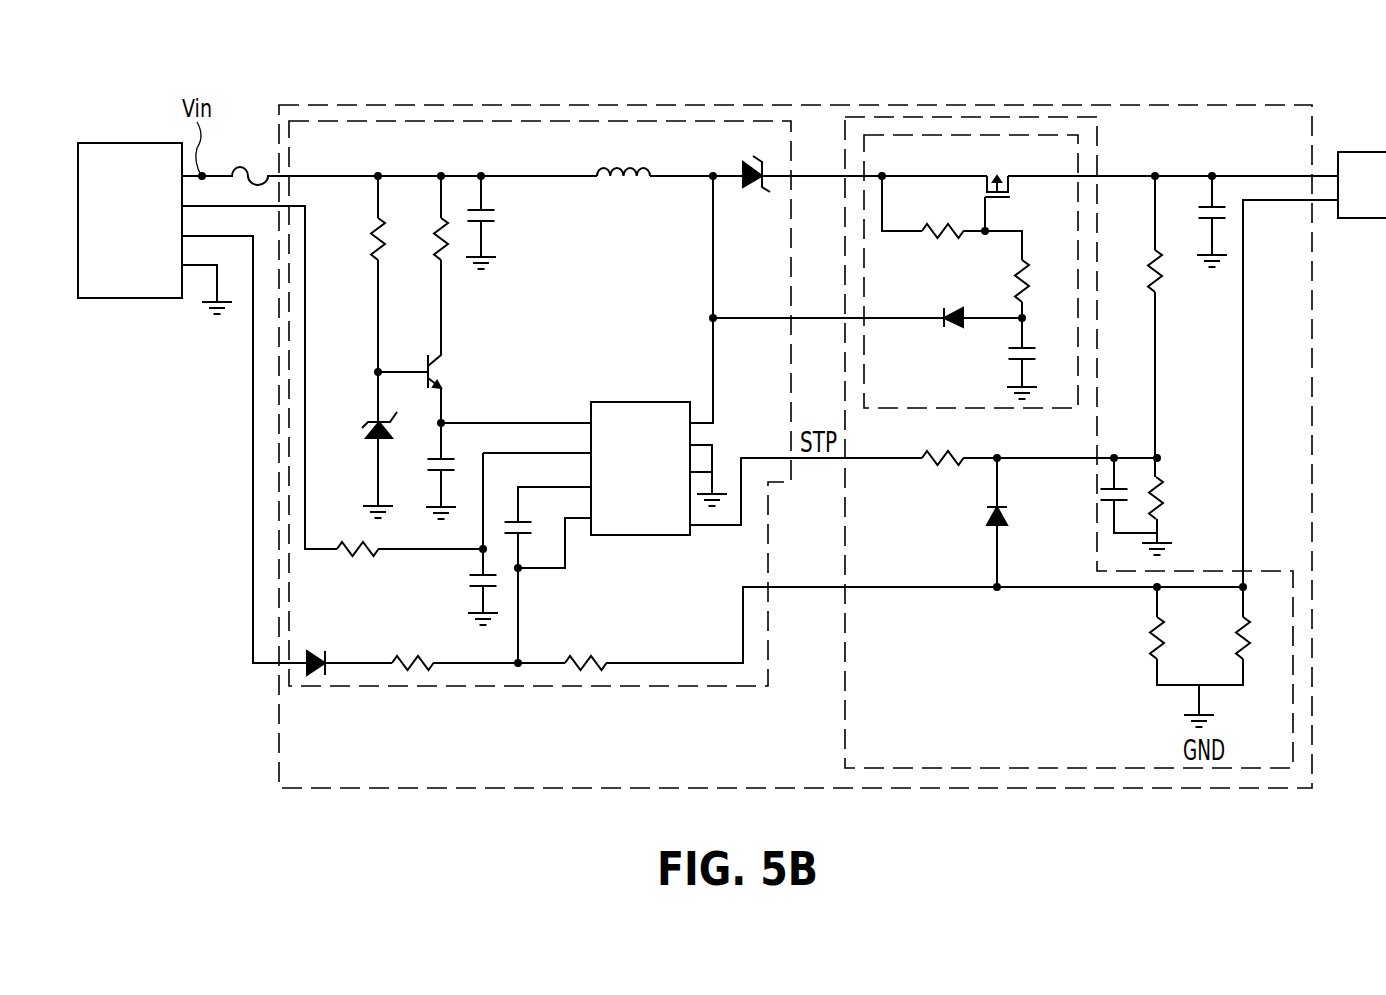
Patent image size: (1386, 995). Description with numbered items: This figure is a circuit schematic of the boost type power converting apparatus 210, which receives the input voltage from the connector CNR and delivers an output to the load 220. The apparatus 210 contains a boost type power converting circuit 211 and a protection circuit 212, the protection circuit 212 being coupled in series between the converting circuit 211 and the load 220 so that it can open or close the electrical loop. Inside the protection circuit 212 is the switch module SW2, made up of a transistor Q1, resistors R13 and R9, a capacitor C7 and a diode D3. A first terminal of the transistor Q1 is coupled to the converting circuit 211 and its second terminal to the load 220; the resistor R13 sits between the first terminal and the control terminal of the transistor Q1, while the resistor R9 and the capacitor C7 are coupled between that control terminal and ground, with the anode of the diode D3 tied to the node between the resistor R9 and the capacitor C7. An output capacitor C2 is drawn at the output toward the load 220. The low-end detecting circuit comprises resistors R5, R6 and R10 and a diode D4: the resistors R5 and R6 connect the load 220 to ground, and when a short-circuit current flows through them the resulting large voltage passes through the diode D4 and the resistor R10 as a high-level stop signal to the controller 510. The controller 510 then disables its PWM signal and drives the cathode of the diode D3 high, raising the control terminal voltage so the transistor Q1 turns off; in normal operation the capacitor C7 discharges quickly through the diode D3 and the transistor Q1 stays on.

The boost type power converting apparatus 210 is at (1275, 100).
The boost type power converting circuit 211 is at (543, 120).
The protection circuit 212 is at (952, 113).
The load 220 is at (1365, 150).
The controller 510 is at (637, 402).
The switch module SW2 is at (1033, 133).
The transistor Q1 is at (997, 187).
The resistor R13 is at (933, 207).
The resistor R9 is at (1023, 274).
The diode D3 is at (868, 297).
The capacitor C7 is at (1038, 358).
The capacitor C2 is at (1197, 221).
The resistor R10 is at (1039, 443).
The diode D4 is at (1013, 522).
The resistor R5 is at (1175, 636).
The resistor R6 is at (1242, 636).
The connector CNR is at (153, 298).